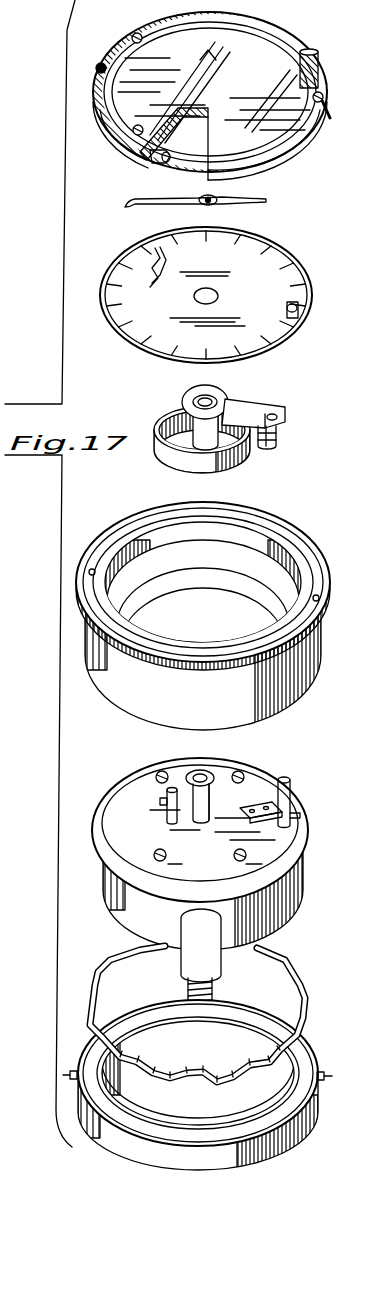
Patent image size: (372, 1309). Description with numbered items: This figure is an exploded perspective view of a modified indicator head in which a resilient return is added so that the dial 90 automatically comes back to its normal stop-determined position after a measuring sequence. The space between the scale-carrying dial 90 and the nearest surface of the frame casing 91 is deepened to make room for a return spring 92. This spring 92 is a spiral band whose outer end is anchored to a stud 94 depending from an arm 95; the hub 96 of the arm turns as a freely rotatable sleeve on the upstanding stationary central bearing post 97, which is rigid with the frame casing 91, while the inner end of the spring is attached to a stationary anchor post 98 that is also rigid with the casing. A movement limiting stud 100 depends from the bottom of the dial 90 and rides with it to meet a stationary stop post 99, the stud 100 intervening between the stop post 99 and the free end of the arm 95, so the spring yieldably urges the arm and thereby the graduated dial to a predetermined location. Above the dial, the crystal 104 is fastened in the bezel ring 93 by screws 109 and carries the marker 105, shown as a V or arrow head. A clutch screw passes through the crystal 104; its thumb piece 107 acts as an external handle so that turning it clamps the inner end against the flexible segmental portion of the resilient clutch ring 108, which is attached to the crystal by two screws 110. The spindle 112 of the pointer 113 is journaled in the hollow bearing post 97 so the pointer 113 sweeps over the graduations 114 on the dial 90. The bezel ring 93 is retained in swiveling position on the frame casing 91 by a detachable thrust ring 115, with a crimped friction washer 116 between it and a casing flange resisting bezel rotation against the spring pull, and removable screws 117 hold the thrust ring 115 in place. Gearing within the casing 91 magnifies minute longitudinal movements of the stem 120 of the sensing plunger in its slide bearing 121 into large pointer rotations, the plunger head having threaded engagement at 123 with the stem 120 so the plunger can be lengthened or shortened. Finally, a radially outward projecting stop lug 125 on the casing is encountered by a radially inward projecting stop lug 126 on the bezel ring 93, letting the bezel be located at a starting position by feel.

The dial 90 is at (255, 275).
The frame casing 91 is at (200, 859).
The return spring 92 is at (168, 450).
The bezel ring 93 is at (203, 621).
The stud 94 is at (277, 440).
The arm 95 is at (265, 412).
The hub 96 is at (215, 412).
The central bearing post 97 is at (210, 800).
The anchor post 98 is at (166, 808).
The stop post 99 is at (291, 792).
The movement limiting stud 100 is at (286, 306).
The crystal 104 is at (190, 117).
The marker 105 is at (216, 58).
The thumb piece 107 is at (318, 56).
The clutch ring 108 is at (165, 162).
The screws 109 is at (102, 63).
The screws 110 is at (137, 33).
The spindle 112 is at (203, 776).
The pointer 113 is at (180, 204).
The graduations 114 is at (170, 272).
The thrust ring 115 is at (318, 1110).
The crimped friction washer 116 is at (304, 990).
The removable screws 117 is at (92, 1082).
The sensing plunger stem 120 is at (203, 962).
The slide bearing 121 is at (223, 970).
The threaded engagement 123 is at (214, 990).
The stop lug 125 is at (300, 815).
The stop lug 126 is at (282, 612).